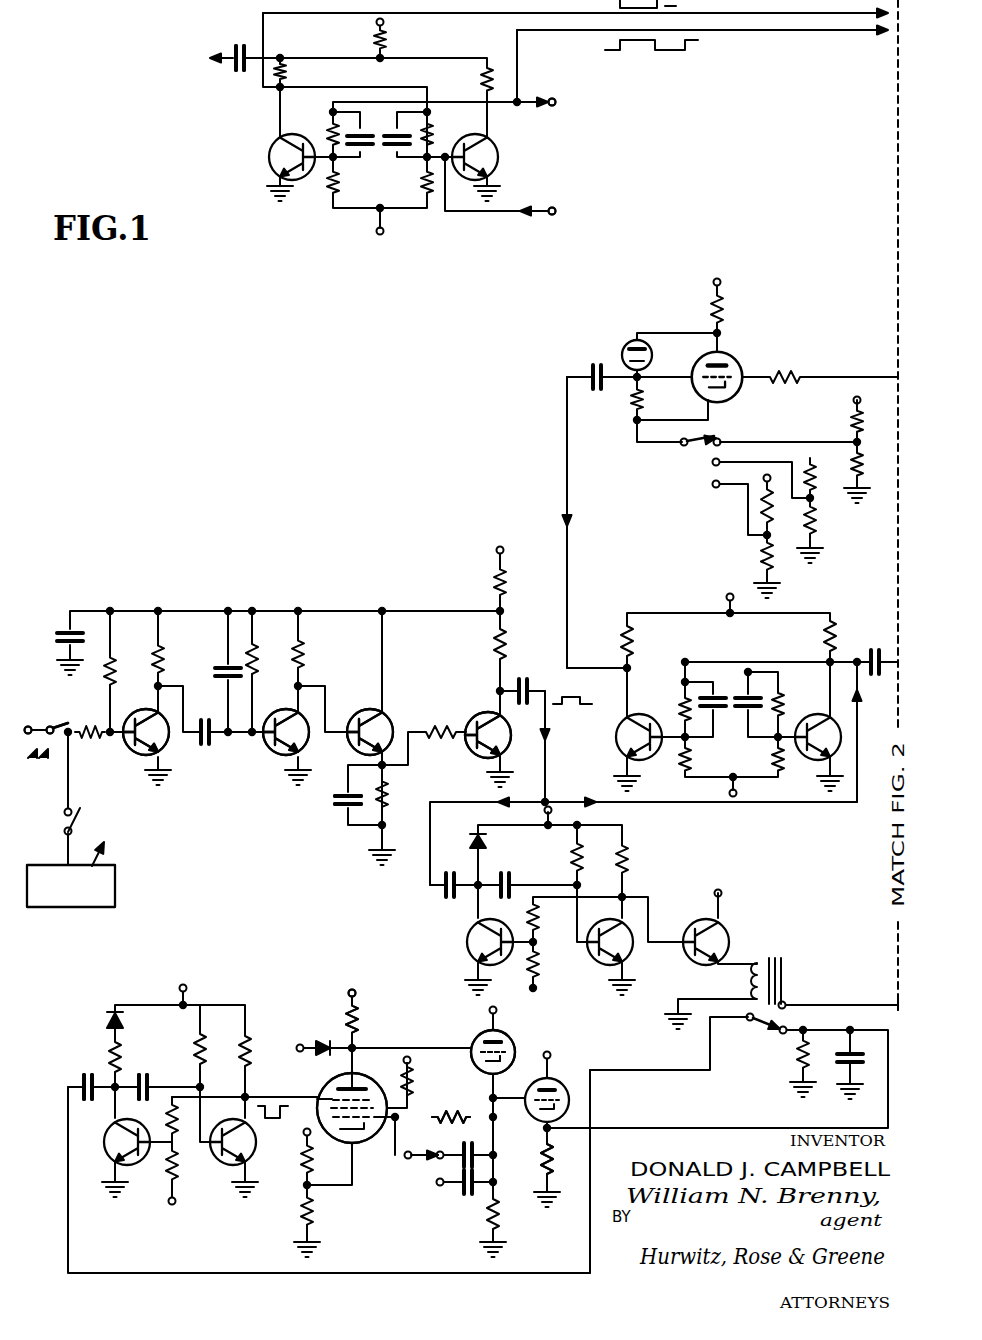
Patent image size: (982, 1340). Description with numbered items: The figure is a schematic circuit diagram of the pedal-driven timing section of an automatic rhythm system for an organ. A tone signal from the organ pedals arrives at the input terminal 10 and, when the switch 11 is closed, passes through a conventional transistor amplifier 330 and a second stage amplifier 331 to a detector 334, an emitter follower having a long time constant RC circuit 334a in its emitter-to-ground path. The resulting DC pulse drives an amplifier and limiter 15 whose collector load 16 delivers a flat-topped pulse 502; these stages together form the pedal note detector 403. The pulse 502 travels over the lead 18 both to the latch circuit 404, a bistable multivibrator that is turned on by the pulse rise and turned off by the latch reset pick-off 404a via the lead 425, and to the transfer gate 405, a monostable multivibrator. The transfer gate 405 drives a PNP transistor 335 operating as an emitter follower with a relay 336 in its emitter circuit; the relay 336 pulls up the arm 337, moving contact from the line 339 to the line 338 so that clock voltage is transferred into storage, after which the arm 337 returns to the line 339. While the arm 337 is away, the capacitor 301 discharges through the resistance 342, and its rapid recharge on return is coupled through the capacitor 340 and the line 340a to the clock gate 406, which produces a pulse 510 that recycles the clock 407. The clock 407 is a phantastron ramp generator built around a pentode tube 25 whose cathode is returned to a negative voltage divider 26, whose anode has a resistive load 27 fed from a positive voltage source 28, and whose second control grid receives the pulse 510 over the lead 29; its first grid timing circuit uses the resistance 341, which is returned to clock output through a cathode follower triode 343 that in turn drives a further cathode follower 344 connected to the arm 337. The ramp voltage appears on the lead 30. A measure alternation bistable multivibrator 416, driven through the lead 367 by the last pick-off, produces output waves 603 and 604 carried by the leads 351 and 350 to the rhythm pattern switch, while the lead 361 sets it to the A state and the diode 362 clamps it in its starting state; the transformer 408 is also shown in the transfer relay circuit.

The input terminal 10 is at (33, 714).
The switch 11 is at (72, 724).
The amplifier and limiter 15 is at (454, 776).
The collector load 16 is at (494, 640).
The lead 18 is at (548, 760).
The pentode tube 25 is at (358, 1076).
The voltage divider 26 is at (303, 1197).
The resistive load 27 is at (372, 1022).
The positive voltage source 28 is at (350, 991).
The lead 29 is at (310, 1097).
The lead 30 is at (852, 377).
The capacitor 301 is at (836, 1068).
The transistor amplifier 330 is at (126, 782).
The second stage amplifier 331 is at (266, 782).
The detector 334 is at (359, 702).
The RC circuit 334a is at (350, 816).
The transistor 335 is at (744, 936).
The relay 336 is at (758, 964).
The arm 337 is at (758, 1027).
The line 338 is at (851, 1005).
The line 339 is at (820, 1031).
The capacitor 340 is at (86, 1078).
The line 340a is at (594, 1193).
The resistance 341 is at (445, 1116).
The resistance 342 is at (798, 1066).
The cathode follower triode 343 is at (488, 1033).
The cathode follower 344 is at (573, 1157).
The lead 350 is at (522, 66).
The lead 351 is at (298, 19).
The lead 361 is at (536, 108).
The diode 362 is at (520, 214).
The lead 367 is at (223, 66).
The pedal note detector 403 is at (282, 918).
The latch circuit 404 is at (740, 868).
The latch reset pick-off 404a is at (692, 566).
The transfer gate 405 is at (620, 1038).
The clock gate 406 is at (170, 1265).
The clock 407 is at (404, 1251).
The transfer transformer 408 is at (818, 994).
The bistable multivibrator 416 is at (454, 262).
The lead 425 is at (567, 485).
The pulse 502 is at (570, 713).
The pulse 510 is at (276, 1122).
The output wave 603 is at (699, 42).
The output wave 604 is at (690, 4).